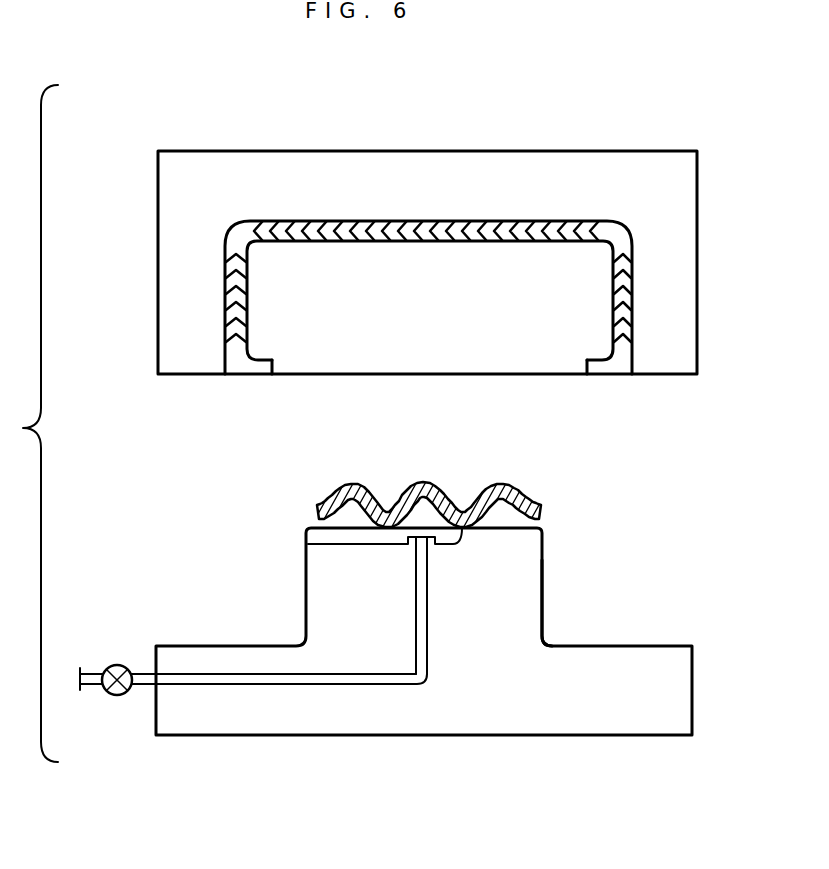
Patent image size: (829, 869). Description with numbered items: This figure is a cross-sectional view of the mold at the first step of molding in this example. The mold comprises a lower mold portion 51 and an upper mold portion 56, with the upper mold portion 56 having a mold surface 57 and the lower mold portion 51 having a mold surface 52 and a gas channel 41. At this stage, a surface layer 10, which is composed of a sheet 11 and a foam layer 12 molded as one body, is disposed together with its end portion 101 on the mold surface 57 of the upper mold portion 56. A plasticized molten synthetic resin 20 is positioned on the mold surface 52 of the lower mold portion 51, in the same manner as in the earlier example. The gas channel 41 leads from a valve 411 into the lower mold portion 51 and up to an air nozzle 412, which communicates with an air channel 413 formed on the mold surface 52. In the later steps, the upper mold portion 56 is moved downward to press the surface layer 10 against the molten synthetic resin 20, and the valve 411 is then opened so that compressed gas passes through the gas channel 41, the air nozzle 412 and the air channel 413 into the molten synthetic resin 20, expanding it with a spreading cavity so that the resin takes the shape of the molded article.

The upper mold portion 56 is at (170, 244).
The mold surface 57 is at (452, 238).
The surface layer 10 is at (497, 244).
The sheet 11 is at (633, 283).
The foam layer 12 is at (612, 330).
The end portion 101 is at (273, 359).
The molten synthetic resin 20 is at (377, 508).
The air nozzle 412 is at (424, 540).
The air channel 413 is at (358, 540).
The lower mold portion 51 is at (325, 619).
The mold surface 52 is at (543, 612).
The gas channel 41 is at (313, 678).
The valve 411 is at (117, 697).